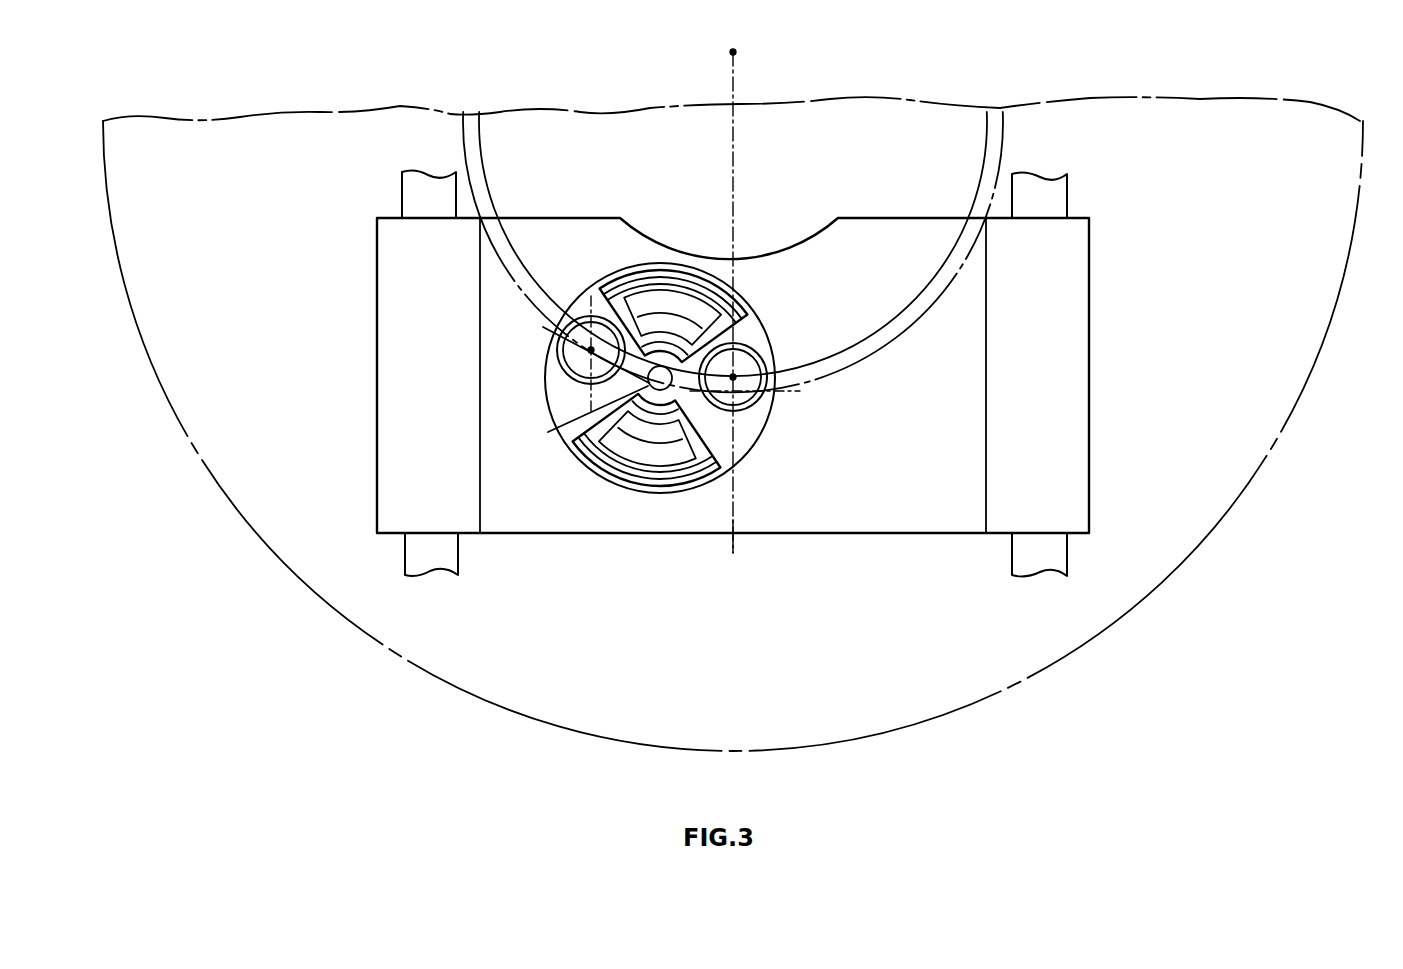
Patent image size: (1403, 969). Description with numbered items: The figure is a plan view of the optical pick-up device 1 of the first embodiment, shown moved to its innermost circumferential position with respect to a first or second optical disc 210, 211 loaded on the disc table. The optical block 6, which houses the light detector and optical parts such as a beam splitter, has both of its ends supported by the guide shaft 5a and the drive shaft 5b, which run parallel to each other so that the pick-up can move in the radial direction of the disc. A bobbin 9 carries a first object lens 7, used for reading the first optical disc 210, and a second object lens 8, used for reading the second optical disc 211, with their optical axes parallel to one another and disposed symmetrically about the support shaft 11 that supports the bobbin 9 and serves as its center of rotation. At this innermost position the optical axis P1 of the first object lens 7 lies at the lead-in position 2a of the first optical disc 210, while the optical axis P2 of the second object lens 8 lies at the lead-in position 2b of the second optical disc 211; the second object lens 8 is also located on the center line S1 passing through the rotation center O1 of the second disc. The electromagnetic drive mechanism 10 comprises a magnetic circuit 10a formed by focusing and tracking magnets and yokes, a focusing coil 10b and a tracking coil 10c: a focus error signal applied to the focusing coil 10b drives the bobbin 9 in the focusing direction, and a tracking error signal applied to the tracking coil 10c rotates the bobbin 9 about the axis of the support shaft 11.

The optical pick-up device 1 is at (1077, 258).
The lead-in position 2a is at (462, 112).
The lead-in position 2b is at (486, 158).
The guide shaft 5a is at (1013, 561).
The drive shaft 5b is at (452, 555).
The optical block 6 is at (880, 522).
The first object lens 7 is at (543, 327).
The second object lens 8 is at (745, 358).
The bobbin 9 is at (746, 427).
The electromagnetic drive mechanism 10 is at (731, 276).
The magnetic circuit 10a is at (668, 315).
The focusing coil 10b is at (653, 345).
The tracking coil 10c is at (623, 286).
The support shaft 11 is at (632, 396).
The rotation center O1 is at (717, 293).
The center line S1 is at (736, 557).
The optical axis P1 is at (543, 354).
The optical axis P2 is at (762, 391).
The first optical disc 210 is at (1246, 487).
The second optical disc 211 is at (736, 305).